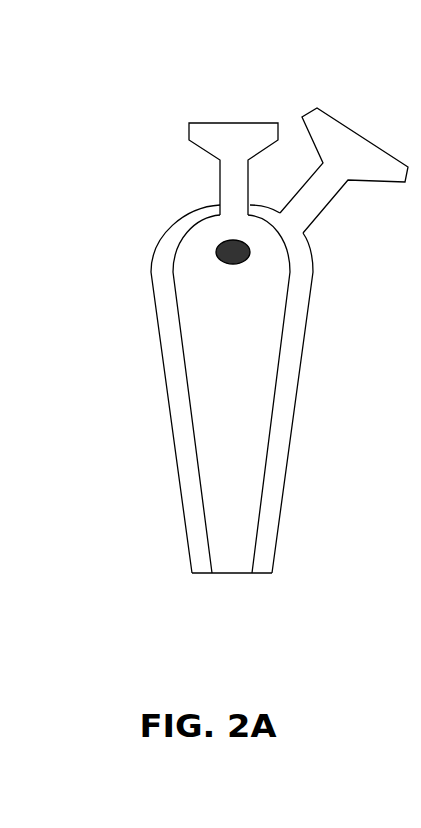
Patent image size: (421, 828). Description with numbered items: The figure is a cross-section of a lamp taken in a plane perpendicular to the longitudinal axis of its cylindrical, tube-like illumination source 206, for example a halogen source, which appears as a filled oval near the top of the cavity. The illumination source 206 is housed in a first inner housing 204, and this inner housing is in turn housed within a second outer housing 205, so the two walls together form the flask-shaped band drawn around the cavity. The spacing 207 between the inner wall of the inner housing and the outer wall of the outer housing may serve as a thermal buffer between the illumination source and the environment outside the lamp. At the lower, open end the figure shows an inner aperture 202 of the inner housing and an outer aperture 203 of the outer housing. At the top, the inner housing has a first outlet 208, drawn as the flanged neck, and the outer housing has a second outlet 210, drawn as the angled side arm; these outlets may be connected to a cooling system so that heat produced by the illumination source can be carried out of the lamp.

The inner aperture 202 is at (227, 563).
The outer aperture 203 is at (202, 568).
The first inner housing 204 is at (270, 452).
The second outer housing 205 is at (170, 407).
The illumination source 206 is at (228, 263).
The spacing 207 is at (168, 328).
The first outlet 208 is at (205, 130).
The second outlet 210 is at (313, 120).